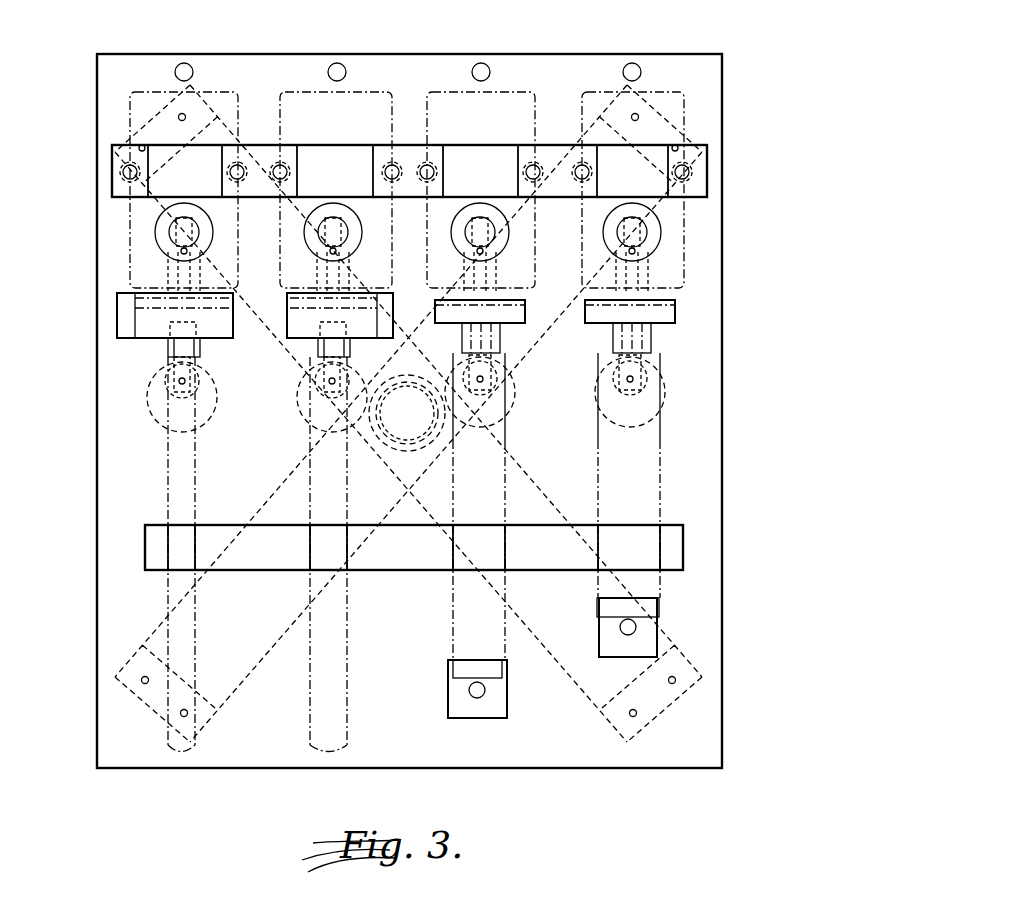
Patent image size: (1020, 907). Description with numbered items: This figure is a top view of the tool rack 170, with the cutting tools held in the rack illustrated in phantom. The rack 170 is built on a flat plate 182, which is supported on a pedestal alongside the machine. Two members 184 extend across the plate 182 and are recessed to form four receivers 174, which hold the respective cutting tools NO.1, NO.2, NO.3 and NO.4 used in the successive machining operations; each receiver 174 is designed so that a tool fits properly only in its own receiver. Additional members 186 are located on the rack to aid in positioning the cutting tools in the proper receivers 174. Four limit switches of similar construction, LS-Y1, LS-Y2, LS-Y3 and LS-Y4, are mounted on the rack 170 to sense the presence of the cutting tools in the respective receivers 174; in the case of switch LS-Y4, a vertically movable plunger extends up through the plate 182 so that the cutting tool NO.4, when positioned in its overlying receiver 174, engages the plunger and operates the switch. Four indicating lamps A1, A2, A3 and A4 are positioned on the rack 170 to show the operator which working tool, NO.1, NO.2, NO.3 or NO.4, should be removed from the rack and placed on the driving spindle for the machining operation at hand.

The tool rack 170 is at (456, 14).
The members 184 is at (400, 157).
The receivers 174 is at (203, 181).
The additional members 186 is at (279, 177).
The flat plate 182 is at (432, 655).
The indicating lamp A1 is at (197, 42).
The indicating lamp A2 is at (352, 38).
The indicating lamp A3 is at (497, 40).
The indicating lamp A4 is at (646, 47).
The limit switch LS-Y1 is at (150, 409).
The limit switch LS-Y2 is at (296, 405).
The limit switch LS-Y3 is at (516, 402).
The limit switch LS-Y4 is at (668, 405).
The cutting tool NO.1 is at (178, 476).
The cutting tool NO.2 is at (320, 496).
The cutting tool NO.3 is at (490, 498).
The cutting tool NO.4 is at (645, 478).